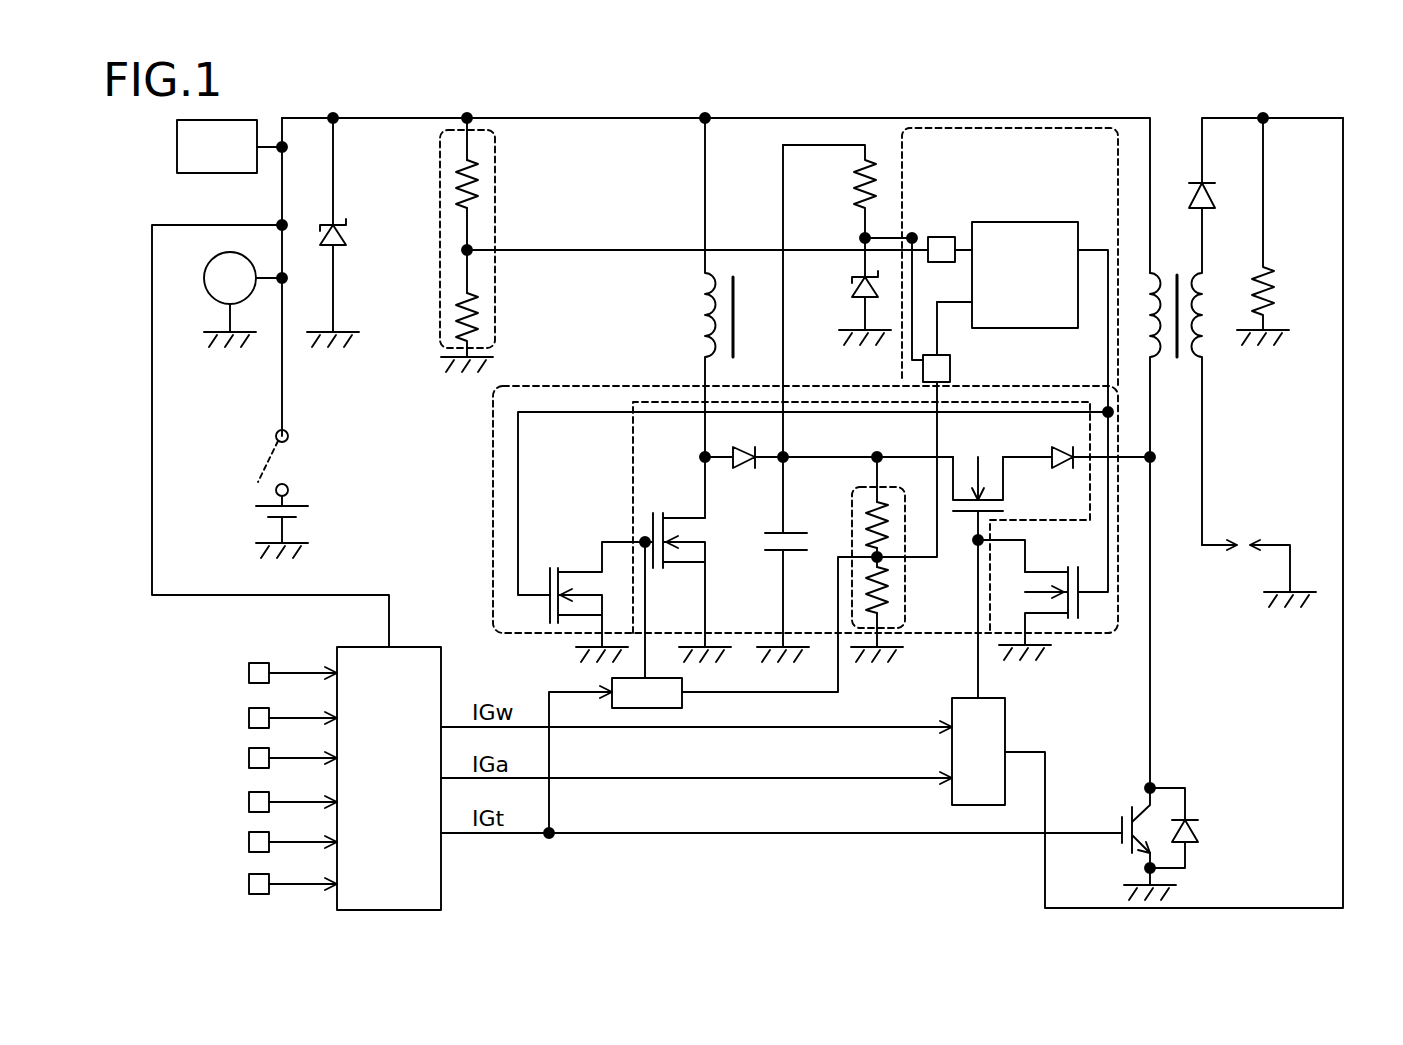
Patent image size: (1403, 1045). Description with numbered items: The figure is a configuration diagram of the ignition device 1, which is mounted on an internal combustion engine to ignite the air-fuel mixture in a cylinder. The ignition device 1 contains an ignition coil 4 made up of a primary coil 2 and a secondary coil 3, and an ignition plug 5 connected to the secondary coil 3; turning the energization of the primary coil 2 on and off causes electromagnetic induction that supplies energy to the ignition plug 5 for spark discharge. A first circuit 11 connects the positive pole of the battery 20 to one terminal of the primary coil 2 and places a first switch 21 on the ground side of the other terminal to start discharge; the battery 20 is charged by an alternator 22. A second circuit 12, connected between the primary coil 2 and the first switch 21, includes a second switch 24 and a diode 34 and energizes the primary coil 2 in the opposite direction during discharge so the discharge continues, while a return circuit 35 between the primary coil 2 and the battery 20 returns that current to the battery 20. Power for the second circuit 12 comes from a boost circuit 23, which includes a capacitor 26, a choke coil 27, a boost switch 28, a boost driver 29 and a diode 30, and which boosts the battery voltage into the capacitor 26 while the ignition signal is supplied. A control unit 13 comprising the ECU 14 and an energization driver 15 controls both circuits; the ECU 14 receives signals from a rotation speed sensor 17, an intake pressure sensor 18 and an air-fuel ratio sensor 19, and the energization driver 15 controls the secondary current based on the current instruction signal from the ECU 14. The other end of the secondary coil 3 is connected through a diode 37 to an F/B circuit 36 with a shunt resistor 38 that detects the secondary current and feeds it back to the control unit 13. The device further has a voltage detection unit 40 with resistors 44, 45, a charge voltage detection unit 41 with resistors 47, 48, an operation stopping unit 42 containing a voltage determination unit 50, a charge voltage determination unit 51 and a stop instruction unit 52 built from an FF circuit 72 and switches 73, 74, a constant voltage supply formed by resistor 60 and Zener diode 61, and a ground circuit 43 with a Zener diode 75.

The ignition device 1 is at (1299, 93).
The primary coil 2 is at (1152, 301).
The secondary coil 3 is at (1210, 292).
The ignition coil 4 is at (1177, 494).
The ignition plug 5 is at (1255, 538).
The first circuit 11 is at (1184, 686).
The second circuit 12 is at (981, 554).
The control unit 13 is at (815, 397).
The ECU 14 is at (413, 645).
The energization driver 15 is at (1000, 726).
The rotation speed sensor 17 is at (249, 673).
The intake pressure sensor 18 is at (249, 718).
The air-fuel ratio sensor 19 is at (249, 758).
The battery 20 is at (298, 505).
The first switch 21 is at (1121, 830).
The alternator 22 is at (221, 288).
The boost circuit 23 is at (792, 375).
The second switch 24 is at (981, 550).
The capacitor 26 is at (784, 552).
The choke coil 27 is at (711, 292).
The boost switch 28 is at (653, 513).
The boost driver 29 is at (690, 700).
The diode 30 is at (746, 470).
The diode 34 is at (1064, 470).
The return circuit 35 is at (661, 99).
The F/B circuit 36 is at (1366, 375).
The diode 37 is at (1212, 199).
The shunt resistor 38 is at (1277, 284).
The voltage detection unit 40 is at (486, 221).
The charge voltage detection unit 41 is at (817, 572).
The operation stopping unit 42 is at (991, 342).
The ground circuit 43 is at (369, 232).
The resistor 44 is at (480, 178).
The resistor 45 is at (480, 310).
The resistor 47 is at (871, 508).
The resistor 48 is at (888, 584).
The voltage determination unit 50 is at (943, 264).
The charge voltage determination unit 51 is at (950, 370).
The stop instruction unit 52 is at (1013, 278).
The resistor 60 is at (855, 170).
The Zener diode 61 is at (852, 292).
The FF circuit 72 is at (1020, 330).
The switch 73 is at (1082, 600).
The switch 74 is at (549, 568).
The Zener diode 75 is at (350, 238).